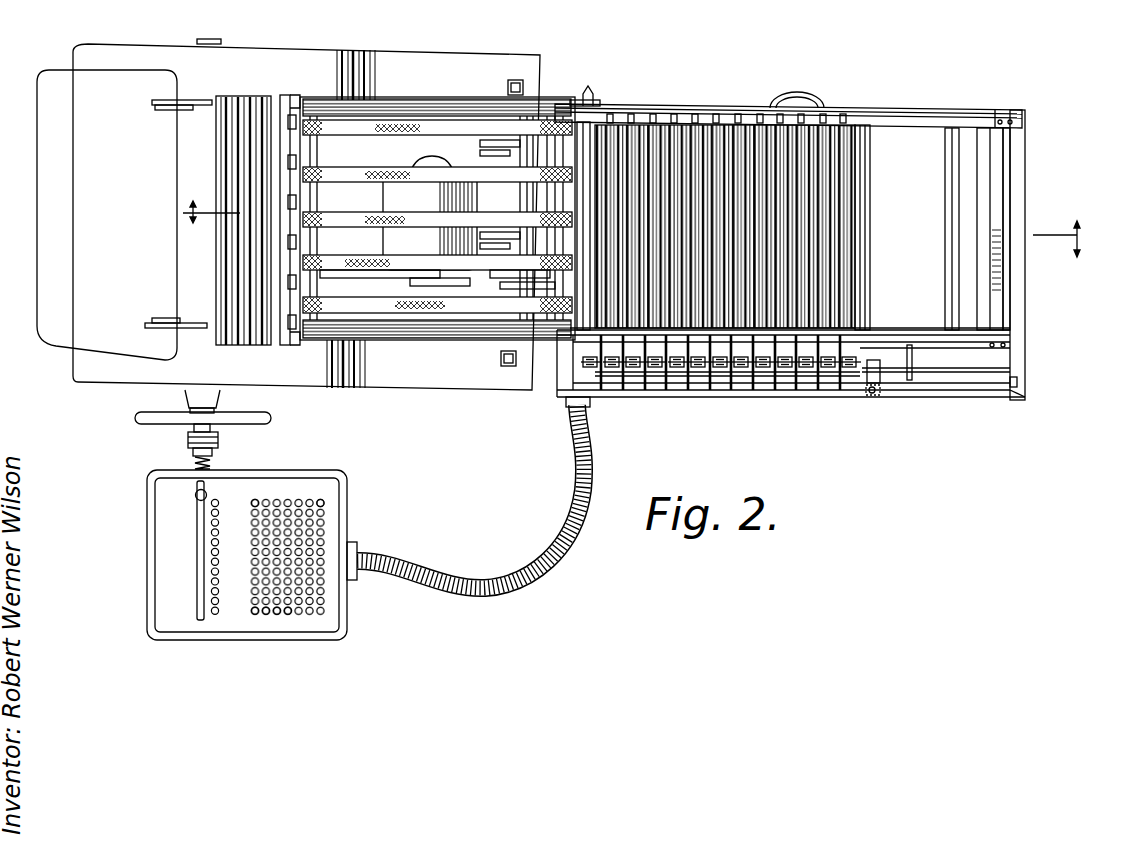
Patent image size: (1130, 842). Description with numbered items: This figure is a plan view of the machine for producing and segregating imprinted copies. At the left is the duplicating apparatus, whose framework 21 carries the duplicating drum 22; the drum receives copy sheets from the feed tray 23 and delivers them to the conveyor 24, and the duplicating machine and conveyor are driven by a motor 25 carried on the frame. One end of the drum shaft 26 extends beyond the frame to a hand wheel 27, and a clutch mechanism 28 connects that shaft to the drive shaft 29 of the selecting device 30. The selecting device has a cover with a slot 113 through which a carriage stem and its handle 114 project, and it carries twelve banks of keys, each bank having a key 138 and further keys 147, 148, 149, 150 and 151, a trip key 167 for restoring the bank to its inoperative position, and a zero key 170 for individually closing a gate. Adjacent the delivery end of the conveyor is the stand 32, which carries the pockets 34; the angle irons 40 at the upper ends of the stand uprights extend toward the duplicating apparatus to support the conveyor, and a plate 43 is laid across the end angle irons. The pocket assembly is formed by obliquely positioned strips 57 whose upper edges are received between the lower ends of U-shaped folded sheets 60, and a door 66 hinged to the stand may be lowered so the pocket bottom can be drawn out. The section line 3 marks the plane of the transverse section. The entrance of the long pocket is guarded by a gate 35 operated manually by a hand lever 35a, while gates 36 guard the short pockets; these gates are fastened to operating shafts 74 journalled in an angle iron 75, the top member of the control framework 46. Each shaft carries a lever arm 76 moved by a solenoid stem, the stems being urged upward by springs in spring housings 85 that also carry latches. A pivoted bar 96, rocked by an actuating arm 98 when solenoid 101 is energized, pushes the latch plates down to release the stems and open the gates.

The framework 21 is at (150, 60).
The duplicating drum 22 is at (243, 100).
The feed tray 23 is at (192, 162).
The section line 3- 3 is at (638, 230).
The conveyor 24 is at (348, 172).
The motor 25 is at (438, 208).
The shaft 26 is at (206, 413).
The hand wheel 27 is at (272, 419).
The clutch mechanism 28 is at (219, 440).
The drive shaft 29 is at (211, 465).
The selecting device 30 is at (148, 553).
The slot 113 is at (197, 595).
The handle 114 is at (196, 497).
The trip key 167 is at (218, 604).
The key 150 is at (300, 503).
The key 149 is at (258, 502).
The key 151 is at (325, 505).
The key 170 is at (254, 614).
The key 138 is at (266, 615).
The key 147 is at (278, 615).
The key 148 is at (289, 615).
The pockets 34 is at (934, 196).
The gates 36 is at (663, 138).
The door 66 is at (743, 105).
The gate 35 is at (580, 135).
The hand lever 35a is at (596, 100).
The angle irons 40 is at (857, 112).
The stand 32 is at (936, 108).
The folded sheets 60 is at (918, 148).
The strips 57 is at (960, 193).
The plate 43 is at (990, 210).
The framework 46 is at (1028, 375).
The operating shafts 74 is at (760, 383).
The spring housings 85 is at (630, 377).
The lever arm 76 is at (700, 378).
The bar 96 is at (870, 356).
The actuating arm 98 is at (882, 371).
The solenoid 101 is at (873, 400).
The angle iron 75 is at (947, 400).